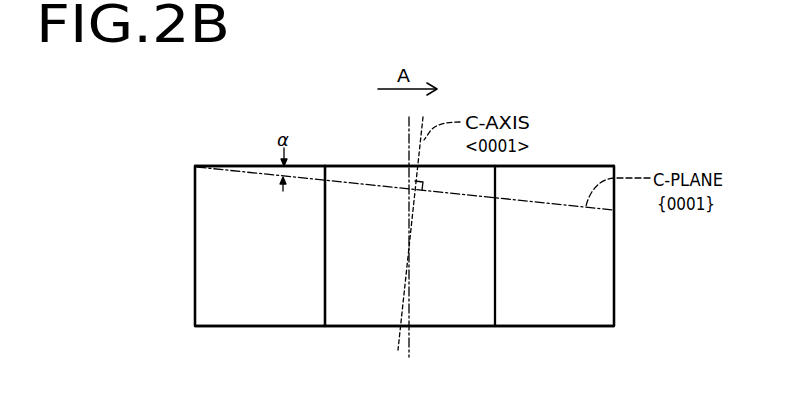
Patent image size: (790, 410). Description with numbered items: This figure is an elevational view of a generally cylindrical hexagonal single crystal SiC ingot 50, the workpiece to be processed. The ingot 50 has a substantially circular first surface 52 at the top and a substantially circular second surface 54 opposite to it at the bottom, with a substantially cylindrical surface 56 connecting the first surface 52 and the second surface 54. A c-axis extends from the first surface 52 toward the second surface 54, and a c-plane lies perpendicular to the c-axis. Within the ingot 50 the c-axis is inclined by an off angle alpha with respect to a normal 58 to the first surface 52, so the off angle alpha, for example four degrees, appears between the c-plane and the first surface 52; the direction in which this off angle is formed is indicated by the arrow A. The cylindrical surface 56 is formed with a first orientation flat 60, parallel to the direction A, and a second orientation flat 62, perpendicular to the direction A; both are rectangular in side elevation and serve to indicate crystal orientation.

The ingot 50 is at (190, 189).
The first surface 52 is at (565, 166).
The second surface 54 is at (216, 327).
The cylindrical surface 56 is at (205, 233).
The normal 58 is at (409, 128).
The first orientation flat 60 is at (455, 300).
The second orientation flat 62 is at (615, 282).